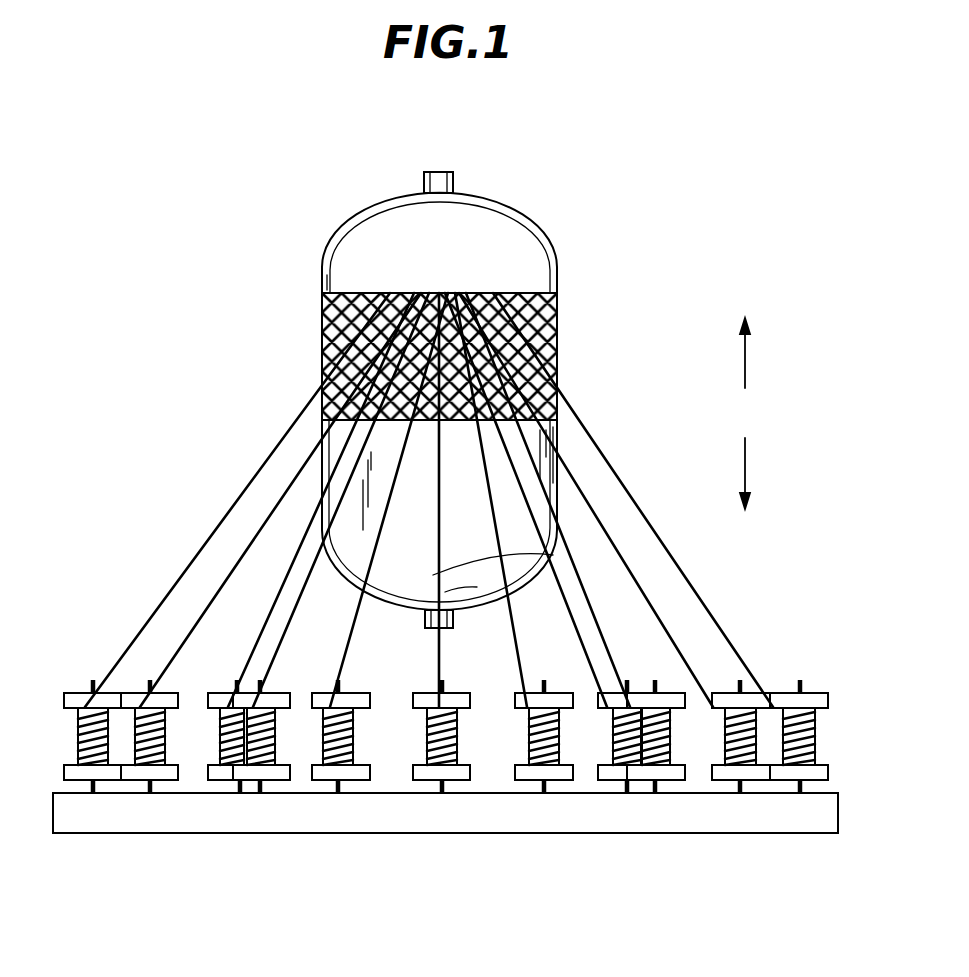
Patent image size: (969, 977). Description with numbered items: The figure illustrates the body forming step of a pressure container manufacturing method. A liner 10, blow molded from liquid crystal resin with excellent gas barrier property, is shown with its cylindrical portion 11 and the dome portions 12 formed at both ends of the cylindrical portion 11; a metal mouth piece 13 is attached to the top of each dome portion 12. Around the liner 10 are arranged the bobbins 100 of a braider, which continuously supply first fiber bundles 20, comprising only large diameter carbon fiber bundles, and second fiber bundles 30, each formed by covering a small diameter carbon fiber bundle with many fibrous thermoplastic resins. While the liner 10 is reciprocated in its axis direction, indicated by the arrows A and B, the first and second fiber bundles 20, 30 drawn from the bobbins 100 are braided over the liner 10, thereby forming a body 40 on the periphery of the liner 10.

The liner 10 is at (583, 245).
The cylindrical portion 11 is at (333, 283).
The dome portion 12 is at (505, 210).
The metal mouth piece 13 is at (433, 180).
The first fiber bundles 20 is at (363, 587).
The second fiber bundles 30 is at (530, 554).
The body 40 is at (557, 363).
The bobbins 100 is at (527, 773).